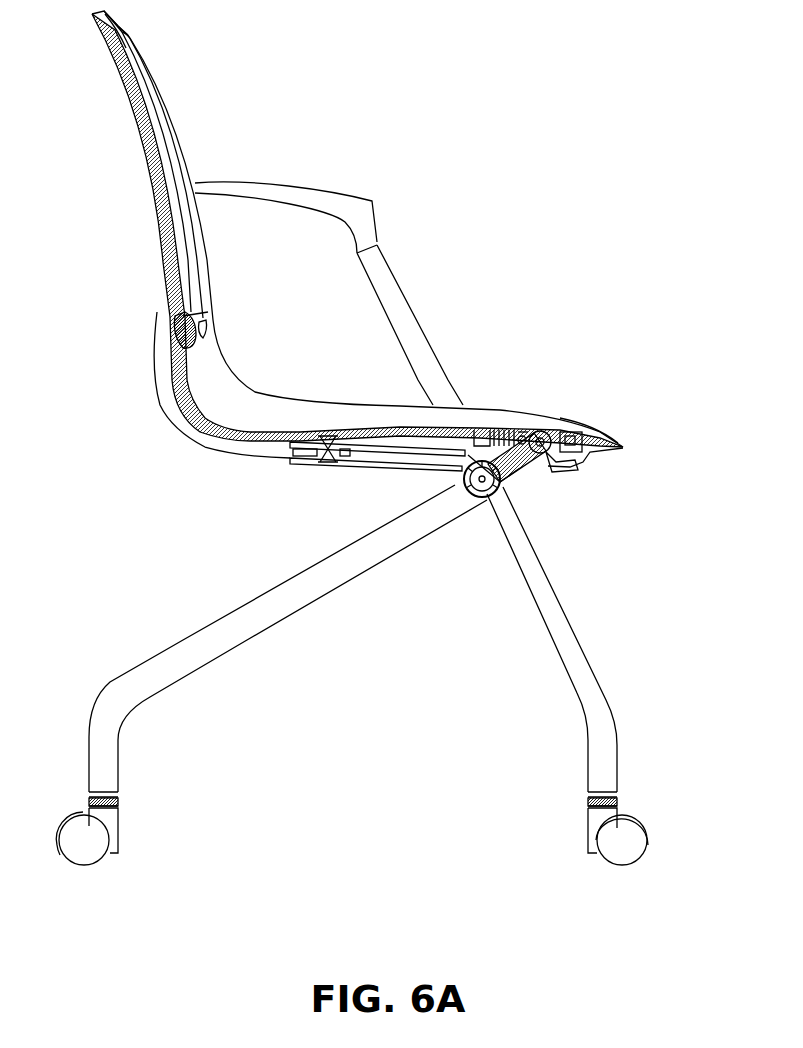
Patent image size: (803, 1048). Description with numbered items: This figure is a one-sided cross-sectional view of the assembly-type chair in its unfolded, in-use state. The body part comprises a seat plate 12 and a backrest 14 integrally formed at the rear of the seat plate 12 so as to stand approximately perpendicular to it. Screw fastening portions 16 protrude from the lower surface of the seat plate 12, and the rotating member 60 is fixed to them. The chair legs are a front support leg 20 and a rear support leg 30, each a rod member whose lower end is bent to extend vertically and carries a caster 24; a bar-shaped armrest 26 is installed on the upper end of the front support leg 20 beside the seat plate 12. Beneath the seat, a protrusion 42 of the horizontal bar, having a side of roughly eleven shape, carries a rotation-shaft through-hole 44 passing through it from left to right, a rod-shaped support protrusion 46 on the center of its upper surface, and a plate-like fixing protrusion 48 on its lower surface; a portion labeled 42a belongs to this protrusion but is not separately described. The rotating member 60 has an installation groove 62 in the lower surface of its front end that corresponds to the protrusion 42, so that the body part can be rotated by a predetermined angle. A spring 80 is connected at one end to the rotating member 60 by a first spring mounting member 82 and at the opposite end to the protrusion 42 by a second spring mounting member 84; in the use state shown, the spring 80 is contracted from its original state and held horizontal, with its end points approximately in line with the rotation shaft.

The seat plate 12 is at (233, 455).
The backrest 14 is at (165, 248).
The screw fastening portions 16 is at (408, 448).
The front support leg 20 is at (422, 328).
The caster 24 is at (635, 837).
The armrest 26 is at (305, 183).
The rear support leg 30 is at (258, 612).
The protrusion 42 is at (535, 485).
The gas spring rod end 42a is at (558, 472).
The rotation-shaft through-hole 44 is at (562, 422).
The support protrusion 46 is at (502, 503).
The fixing protrusion 48 is at (535, 470).
The rotating member 60 is at (585, 456).
The installation groove 62 is at (102, 833).
The spring 80 is at (490, 430).
The first spring mounting member 82 is at (478, 425).
The second spring mounting member 84 is at (500, 433).